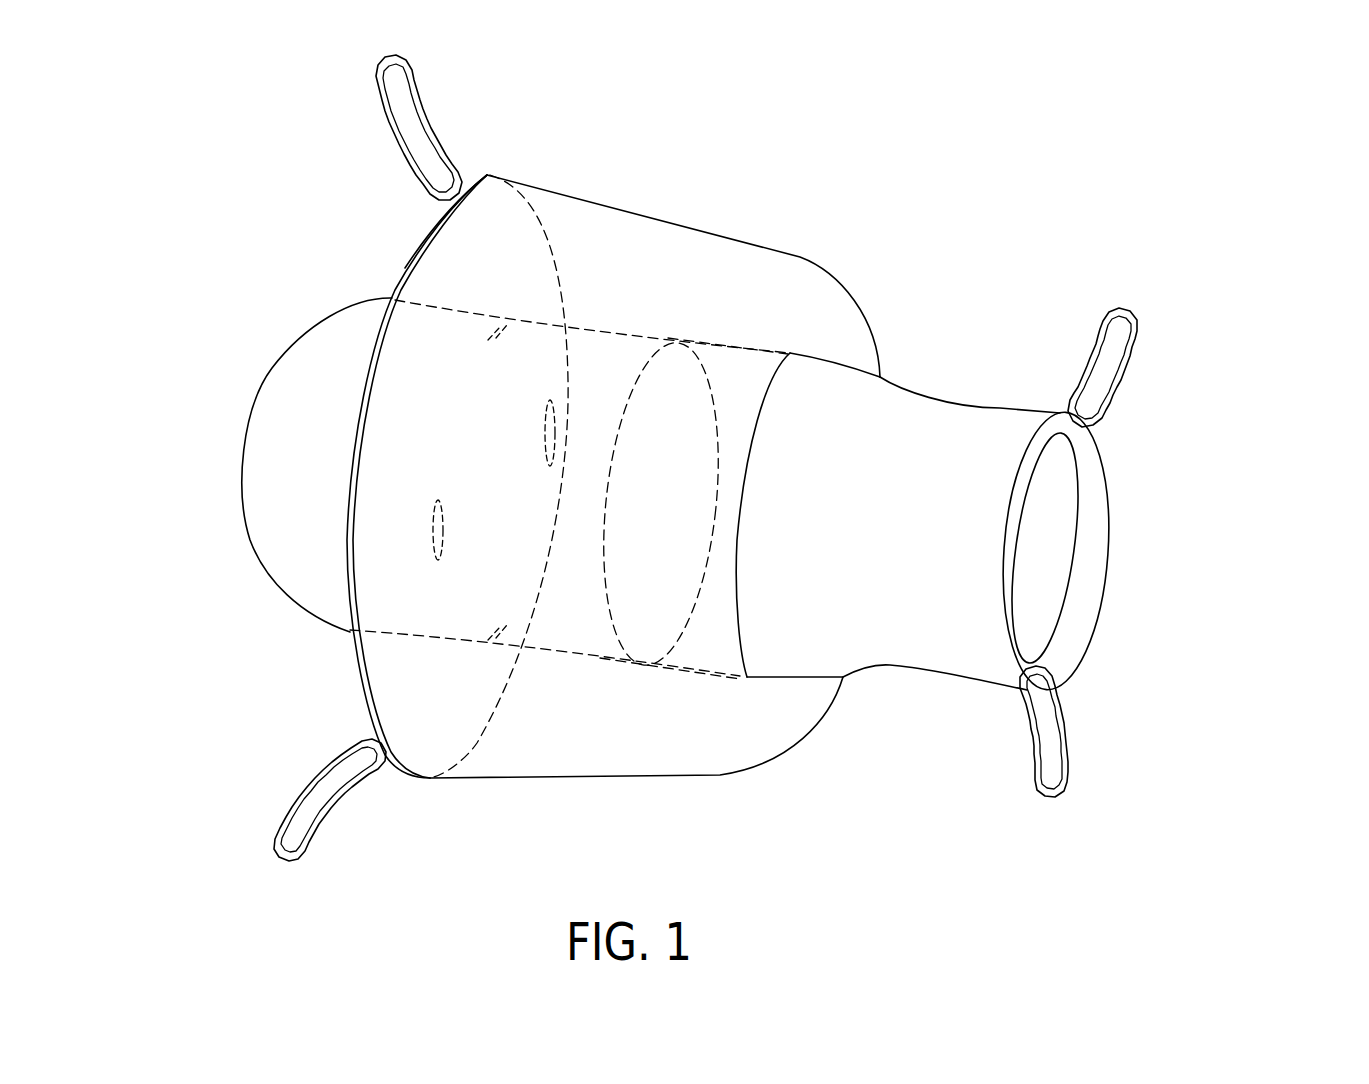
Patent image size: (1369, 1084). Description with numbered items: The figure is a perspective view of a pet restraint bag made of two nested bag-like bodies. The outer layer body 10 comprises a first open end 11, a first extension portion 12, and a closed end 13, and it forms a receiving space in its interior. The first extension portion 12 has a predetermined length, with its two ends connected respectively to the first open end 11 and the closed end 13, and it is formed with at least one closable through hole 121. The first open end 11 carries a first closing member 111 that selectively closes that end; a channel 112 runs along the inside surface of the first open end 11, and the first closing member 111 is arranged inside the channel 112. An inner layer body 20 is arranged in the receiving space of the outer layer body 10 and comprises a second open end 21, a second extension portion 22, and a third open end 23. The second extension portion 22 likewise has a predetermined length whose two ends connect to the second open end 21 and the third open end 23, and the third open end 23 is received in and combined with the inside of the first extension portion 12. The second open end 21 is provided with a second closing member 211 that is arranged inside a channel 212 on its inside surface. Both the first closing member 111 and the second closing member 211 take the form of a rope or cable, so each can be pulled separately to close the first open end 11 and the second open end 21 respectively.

The outer layer body 10 is at (718, 204).
The first open end 11 is at (352, 660).
The first closing member 111 is at (380, 103).
The channel 112 is at (403, 267).
The first extension portion 12 is at (580, 767).
The closable through hole 121 is at (430, 530).
The closed end 13 is at (261, 405).
The inner layer body 20 is at (973, 737).
The second open end 21 is at (1138, 482).
The second closing member 211 is at (1130, 305).
The channel 212 is at (1090, 515).
The second extension portion 22 is at (890, 670).
The third open end 23 is at (680, 633).